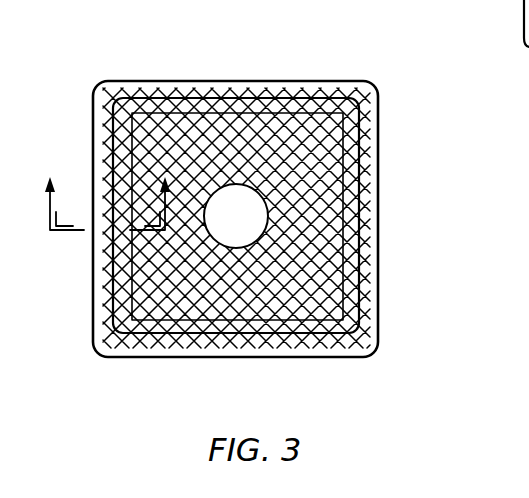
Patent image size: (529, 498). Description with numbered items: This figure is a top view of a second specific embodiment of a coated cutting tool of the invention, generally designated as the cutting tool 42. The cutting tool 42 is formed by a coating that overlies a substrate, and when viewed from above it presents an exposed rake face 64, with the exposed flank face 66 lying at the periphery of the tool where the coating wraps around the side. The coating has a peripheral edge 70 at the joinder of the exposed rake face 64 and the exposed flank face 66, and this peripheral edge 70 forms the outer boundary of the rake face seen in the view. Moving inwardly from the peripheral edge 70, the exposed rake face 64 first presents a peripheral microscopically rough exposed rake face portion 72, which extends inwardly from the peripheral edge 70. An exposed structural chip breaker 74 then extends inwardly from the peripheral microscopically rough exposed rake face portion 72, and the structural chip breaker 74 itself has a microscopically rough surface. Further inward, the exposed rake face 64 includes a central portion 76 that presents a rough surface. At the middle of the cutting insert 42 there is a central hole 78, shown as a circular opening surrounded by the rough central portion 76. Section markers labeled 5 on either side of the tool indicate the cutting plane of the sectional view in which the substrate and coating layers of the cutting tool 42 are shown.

The cutting tool 42 is at (350, 56).
The exposed rake face 64 is at (358, 323).
The exposed flank face 66 is at (315, 358).
The peripheral edge 70 is at (380, 125).
The peripheral microscopically rough exposed rake face portion 72 is at (369, 289).
The structural chip breaker 74 is at (265, 107).
The central portion 76 is at (356, 251).
The central hole 78 is at (255, 213).
The section line 5- 5 is at (107, 203).